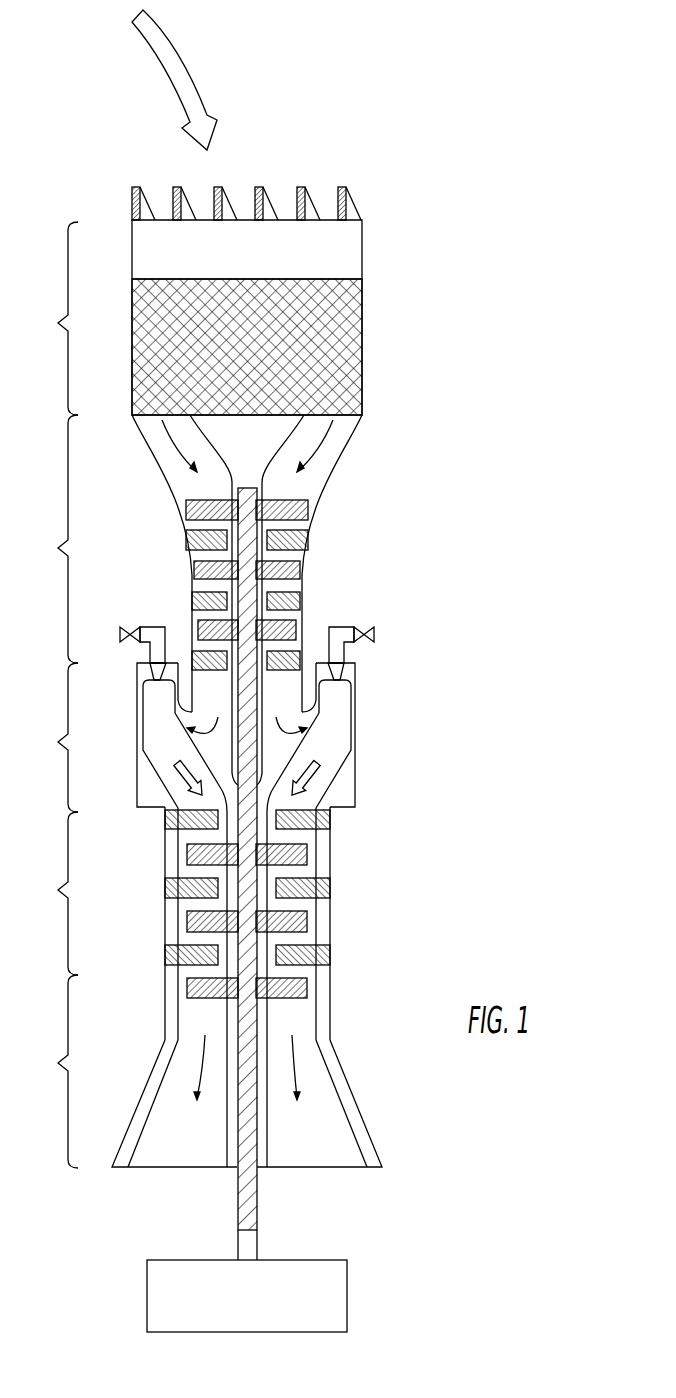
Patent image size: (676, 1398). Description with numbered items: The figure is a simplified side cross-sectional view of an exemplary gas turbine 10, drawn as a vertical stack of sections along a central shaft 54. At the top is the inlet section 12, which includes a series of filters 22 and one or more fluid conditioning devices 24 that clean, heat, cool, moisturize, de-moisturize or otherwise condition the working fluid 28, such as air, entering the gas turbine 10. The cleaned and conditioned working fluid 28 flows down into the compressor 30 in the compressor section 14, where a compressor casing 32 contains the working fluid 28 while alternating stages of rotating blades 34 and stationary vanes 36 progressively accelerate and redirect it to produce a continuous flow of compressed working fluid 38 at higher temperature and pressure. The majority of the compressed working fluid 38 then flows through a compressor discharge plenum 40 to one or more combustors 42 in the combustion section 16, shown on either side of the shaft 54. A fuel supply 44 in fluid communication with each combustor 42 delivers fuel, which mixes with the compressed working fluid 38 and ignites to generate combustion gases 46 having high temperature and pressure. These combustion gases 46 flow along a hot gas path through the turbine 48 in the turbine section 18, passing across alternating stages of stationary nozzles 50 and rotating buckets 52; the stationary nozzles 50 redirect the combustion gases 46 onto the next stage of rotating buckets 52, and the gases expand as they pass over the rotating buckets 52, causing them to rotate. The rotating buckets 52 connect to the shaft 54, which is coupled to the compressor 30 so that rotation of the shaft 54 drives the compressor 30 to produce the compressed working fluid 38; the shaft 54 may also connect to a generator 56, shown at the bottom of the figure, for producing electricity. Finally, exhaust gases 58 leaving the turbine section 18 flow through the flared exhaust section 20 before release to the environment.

The gas turbine 10 is at (530, 564).
The inlet section 12 is at (197, 241).
The compressor section 14 is at (239, 873).
The combustion section 16 is at (239, 703).
The turbine section 18 is at (221, 987).
The exhaust section 20 is at (209, 1071).
The filters 22 is at (292, 200).
The fluid conditioning devices 24 is at (132, 315).
The working fluid 28 is at (200, 88).
The compressor 30 is at (338, 499).
The compressor casing 32 is at (162, 485).
The rotating blades 34 is at (185, 512).
The stationary vanes 36 is at (300, 597).
The compressed working fluid 38 is at (277, 717).
The compressor discharge plenum 40 is at (204, 760).
The combustors 42 is at (136, 737).
The fuel supply 44 is at (376, 626).
The combustion gases 46 is at (183, 785).
The turbine 48 is at (336, 917).
The stationary nozzles 50 is at (330, 820).
The rotating buckets 52 is at (187, 917).
The shaft 54 is at (237, 1192).
The generator 56 is at (147, 1272).
The exhaust gases 58 is at (292, 1062).